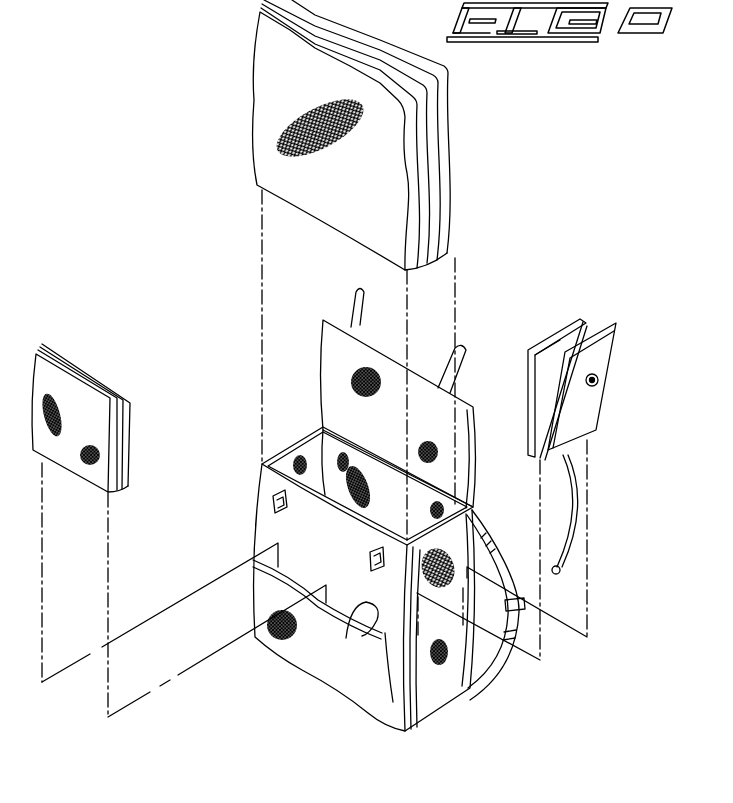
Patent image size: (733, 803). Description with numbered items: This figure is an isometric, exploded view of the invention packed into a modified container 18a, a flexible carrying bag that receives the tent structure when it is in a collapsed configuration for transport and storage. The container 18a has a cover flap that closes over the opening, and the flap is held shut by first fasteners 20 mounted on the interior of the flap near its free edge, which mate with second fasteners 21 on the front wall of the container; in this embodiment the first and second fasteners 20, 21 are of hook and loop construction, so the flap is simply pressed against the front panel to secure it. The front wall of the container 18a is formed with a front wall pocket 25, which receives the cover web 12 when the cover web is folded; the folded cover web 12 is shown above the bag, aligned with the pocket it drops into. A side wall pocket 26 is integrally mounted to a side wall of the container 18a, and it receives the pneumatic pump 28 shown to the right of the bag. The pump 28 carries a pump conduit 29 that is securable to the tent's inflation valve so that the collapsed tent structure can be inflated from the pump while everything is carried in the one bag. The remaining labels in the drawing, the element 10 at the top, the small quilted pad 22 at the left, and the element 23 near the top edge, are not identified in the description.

The quilted cover 10 is at (478, 158).
The cover web 12 is at (215, 0).
The modified container 18a is at (402, 724).
The first fasteners 20 is at (277, 508).
The second fasteners 21 is at (357, 326).
The side pocket 22 is at (128, 473).
The fastener 23 is at (215, 29).
The front wall pocket 25 is at (366, 636).
The side wall pocket 26 is at (447, 680).
The pneumatic pump 28 is at (597, 393).
The pump conduit 29 is at (570, 548).